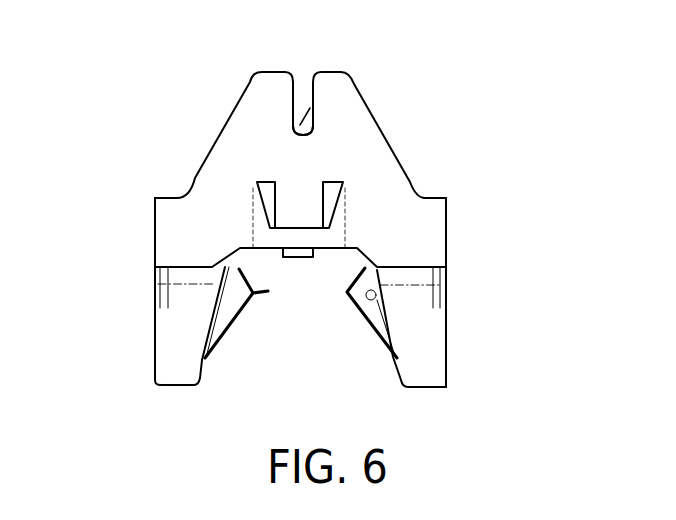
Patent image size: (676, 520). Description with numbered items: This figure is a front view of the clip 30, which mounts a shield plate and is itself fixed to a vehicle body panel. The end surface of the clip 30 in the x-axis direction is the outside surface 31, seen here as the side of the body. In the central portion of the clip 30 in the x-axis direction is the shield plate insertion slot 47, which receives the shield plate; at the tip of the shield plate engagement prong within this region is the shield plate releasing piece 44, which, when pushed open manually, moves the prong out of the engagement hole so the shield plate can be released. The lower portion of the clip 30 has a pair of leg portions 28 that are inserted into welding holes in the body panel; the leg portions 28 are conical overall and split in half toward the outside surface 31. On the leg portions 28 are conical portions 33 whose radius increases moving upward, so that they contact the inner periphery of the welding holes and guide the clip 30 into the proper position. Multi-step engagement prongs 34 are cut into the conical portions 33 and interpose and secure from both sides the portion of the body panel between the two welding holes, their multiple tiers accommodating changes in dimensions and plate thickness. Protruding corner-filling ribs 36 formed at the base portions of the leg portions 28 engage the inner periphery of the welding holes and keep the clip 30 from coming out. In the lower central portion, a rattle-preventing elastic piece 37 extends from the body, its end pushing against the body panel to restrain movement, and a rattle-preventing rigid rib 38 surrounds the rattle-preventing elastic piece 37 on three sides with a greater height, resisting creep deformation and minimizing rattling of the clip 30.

The clip 30 is at (428, 143).
The outside surface 31 is at (155, 237).
The leg portions 28 is at (155, 356).
The rattle-preventing rigid rib 38 is at (317, 238).
The rattle-preventing elastic piece 37 is at (297, 258).
The conical portions 33 is at (225, 330).
The multi-step engagement prongs 34 is at (268, 292).
The corner-filling ribs 36 is at (382, 308).
The shield plate insertion slot 47 is at (302, 90).
The shield plate releasing piece 44 is at (299, 112).